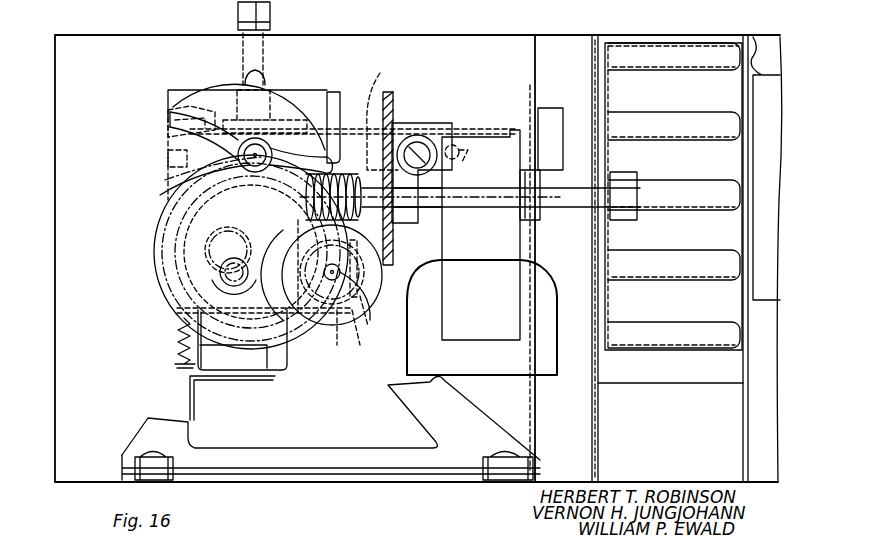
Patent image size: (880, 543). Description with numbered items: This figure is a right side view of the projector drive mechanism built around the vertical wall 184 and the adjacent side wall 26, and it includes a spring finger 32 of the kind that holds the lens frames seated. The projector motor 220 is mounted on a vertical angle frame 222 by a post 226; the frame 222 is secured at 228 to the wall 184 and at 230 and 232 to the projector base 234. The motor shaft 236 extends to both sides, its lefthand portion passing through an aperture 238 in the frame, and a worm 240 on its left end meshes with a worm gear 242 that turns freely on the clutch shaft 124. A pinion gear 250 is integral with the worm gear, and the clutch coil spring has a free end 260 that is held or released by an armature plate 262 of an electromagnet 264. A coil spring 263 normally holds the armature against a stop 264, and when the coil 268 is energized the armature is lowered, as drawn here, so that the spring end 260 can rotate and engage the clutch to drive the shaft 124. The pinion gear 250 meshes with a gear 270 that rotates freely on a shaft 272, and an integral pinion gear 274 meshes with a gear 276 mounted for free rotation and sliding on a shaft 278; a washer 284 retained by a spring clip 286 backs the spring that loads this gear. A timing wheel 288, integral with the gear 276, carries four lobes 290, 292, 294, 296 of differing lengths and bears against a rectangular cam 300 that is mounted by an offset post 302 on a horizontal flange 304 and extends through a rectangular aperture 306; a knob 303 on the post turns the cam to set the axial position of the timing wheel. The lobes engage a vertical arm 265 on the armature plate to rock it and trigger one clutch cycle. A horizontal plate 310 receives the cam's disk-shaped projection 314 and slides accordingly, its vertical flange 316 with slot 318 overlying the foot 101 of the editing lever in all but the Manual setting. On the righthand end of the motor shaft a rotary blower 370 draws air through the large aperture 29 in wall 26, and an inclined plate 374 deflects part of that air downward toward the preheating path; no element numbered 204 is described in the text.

The vertical wall 184 is at (95, 63).
The side wall 26 is at (551, 50).
The aperture 29 is at (755, 37).
The spring finger 32 is at (455, 150).
The foot 101 is at (520, 193).
The clutch shaft 124 is at (379, 319).
The plate 204 is at (592, 414).
The projector motor 220 is at (502, 305).
The vertical angle frame 222 is at (386, 96).
The post 226 is at (446, 262).
The securing point 228 is at (414, 135).
The securing point 230 is at (186, 440).
The securing point 232 is at (494, 450).
The projector base 234 is at (350, 482).
The motor shaft 236 is at (418, 207).
The aperture 238 is at (412, 191).
The worm 240 is at (252, 162).
The worm gear 242 is at (262, 315).
The pinion gear 250 is at (298, 330).
The free end of spring 260 is at (371, 299).
The armature plate 262 is at (336, 335).
The coil spring 263 is at (176, 352).
The electromagnet 264 is at (262, 387).
The vertical arm 265 is at (222, 286).
The coil 268 is at (240, 364).
The gear 270 is at (157, 292).
The shaft 272 is at (214, 272).
The pinion gear 274 is at (208, 250).
The gear 276 is at (166, 188).
The shaft 278 is at (185, 196).
The washer 284 is at (170, 168).
The spring clip 286 is at (173, 126).
The timing wheel 288 is at (172, 112).
The lobe 290 is at (169, 144).
The lobe 292 is at (258, 76).
The lobe 294 is at (332, 95).
The lobe 296 is at (274, 235).
The rectangular cam 300 is at (223, 93).
The post 302 is at (262, 52).
The knob 303 is at (270, 14).
The horizontal flange 304 is at (170, 93).
The rectangular aperture 306 is at (170, 90).
The horizontal plate 310 is at (476, 130).
The disk-shaped projection 314 is at (303, 100).
The vertical flange 316 is at (383, 92).
The slot 318 is at (462, 152).
The rotary blower 370 is at (634, 50).
The inclined plate 374 is at (660, 383).